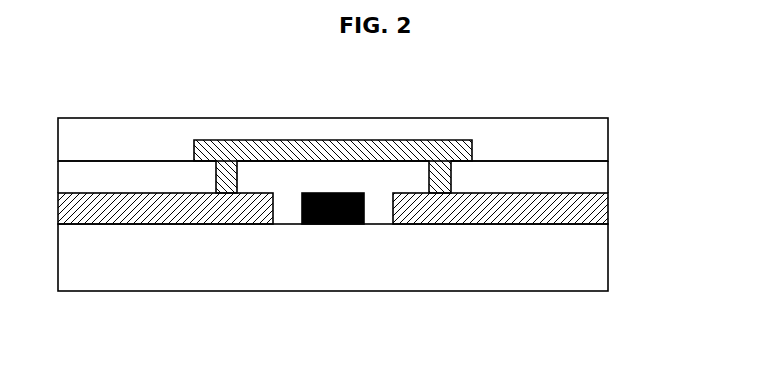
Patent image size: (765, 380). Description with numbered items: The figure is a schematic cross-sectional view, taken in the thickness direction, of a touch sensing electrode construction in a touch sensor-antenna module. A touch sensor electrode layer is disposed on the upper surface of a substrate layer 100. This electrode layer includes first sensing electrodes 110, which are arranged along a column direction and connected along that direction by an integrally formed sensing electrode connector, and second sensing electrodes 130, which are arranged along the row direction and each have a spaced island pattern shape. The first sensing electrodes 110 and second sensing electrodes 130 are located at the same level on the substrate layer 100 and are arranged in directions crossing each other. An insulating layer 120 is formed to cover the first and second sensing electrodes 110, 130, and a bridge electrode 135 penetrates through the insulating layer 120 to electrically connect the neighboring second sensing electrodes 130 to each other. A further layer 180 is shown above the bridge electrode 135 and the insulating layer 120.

The substrate layer 100 is at (601, 259).
The first sensing electrodes 110 is at (325, 224).
The insulating layer 120 is at (601, 173).
The second sensing electrodes 130 is at (175, 224).
The bridge electrode 135 is at (337, 140).
The passivation layer 180 is at (601, 138).